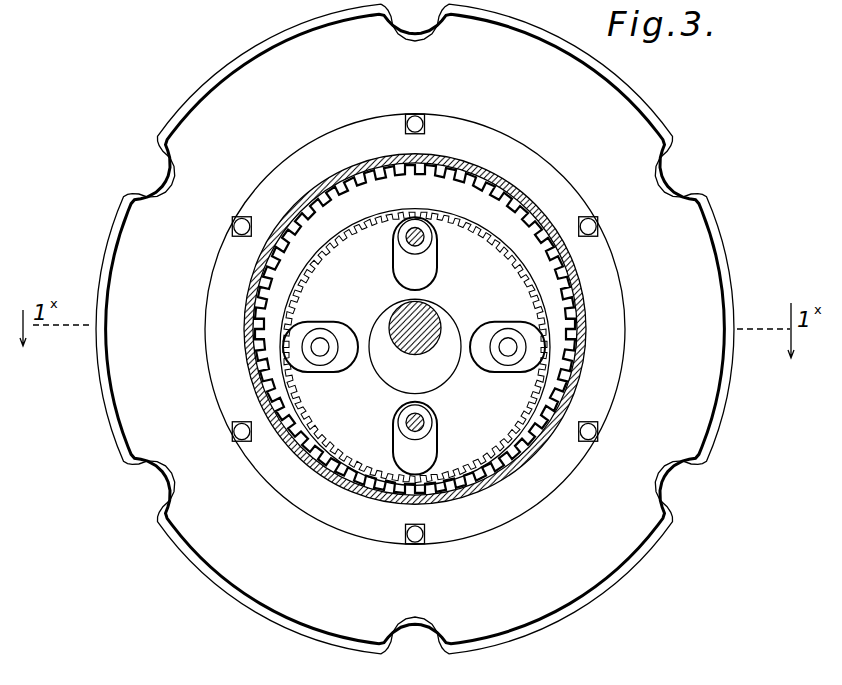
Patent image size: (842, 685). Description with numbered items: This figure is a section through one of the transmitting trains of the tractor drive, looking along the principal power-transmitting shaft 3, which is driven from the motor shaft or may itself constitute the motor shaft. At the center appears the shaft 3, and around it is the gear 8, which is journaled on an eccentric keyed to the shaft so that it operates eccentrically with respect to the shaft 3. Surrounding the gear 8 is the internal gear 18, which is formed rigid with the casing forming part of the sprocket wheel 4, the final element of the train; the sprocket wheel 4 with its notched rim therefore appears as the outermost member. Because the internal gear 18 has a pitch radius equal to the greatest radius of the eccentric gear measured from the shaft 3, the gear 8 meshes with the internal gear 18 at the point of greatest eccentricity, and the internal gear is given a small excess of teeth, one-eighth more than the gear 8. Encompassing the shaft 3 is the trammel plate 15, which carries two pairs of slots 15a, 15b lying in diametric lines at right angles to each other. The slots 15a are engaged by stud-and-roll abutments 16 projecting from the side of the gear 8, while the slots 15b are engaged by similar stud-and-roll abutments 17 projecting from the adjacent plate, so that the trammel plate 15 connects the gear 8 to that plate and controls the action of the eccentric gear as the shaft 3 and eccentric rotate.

The principal power-transmitting shaft 3 is at (415, 353).
The sprocket wheel 4 is at (133, 236).
The gear 8 is at (330, 440).
The trammel plate 15 is at (460, 165).
The slots 15a is at (488, 333).
The slots 15b is at (422, 272).
The stud-and-roll abutments 16 is at (322, 360).
The stud-and-roll abutments 17 is at (399, 237).
The internal gear 18 is at (328, 193).